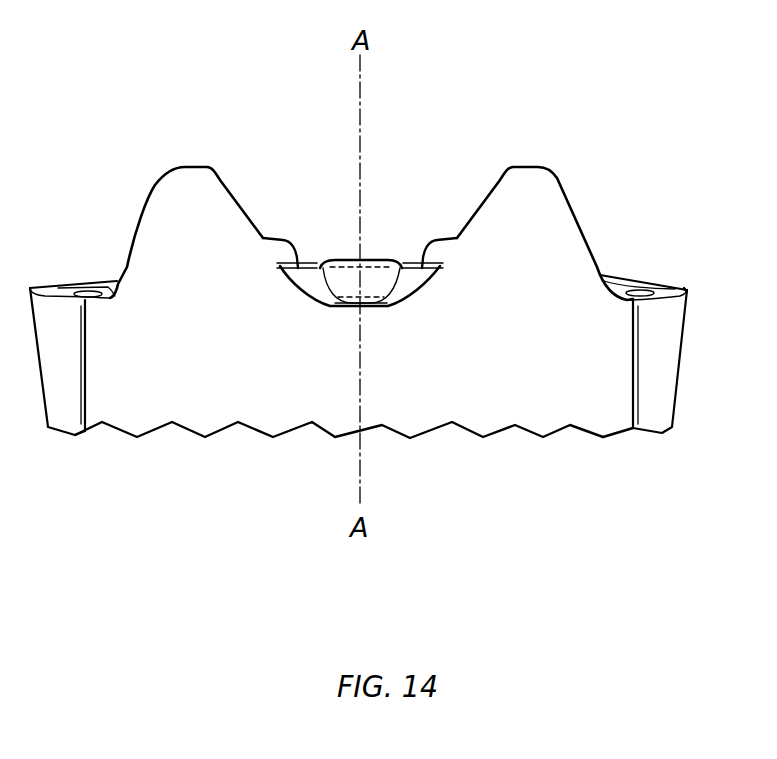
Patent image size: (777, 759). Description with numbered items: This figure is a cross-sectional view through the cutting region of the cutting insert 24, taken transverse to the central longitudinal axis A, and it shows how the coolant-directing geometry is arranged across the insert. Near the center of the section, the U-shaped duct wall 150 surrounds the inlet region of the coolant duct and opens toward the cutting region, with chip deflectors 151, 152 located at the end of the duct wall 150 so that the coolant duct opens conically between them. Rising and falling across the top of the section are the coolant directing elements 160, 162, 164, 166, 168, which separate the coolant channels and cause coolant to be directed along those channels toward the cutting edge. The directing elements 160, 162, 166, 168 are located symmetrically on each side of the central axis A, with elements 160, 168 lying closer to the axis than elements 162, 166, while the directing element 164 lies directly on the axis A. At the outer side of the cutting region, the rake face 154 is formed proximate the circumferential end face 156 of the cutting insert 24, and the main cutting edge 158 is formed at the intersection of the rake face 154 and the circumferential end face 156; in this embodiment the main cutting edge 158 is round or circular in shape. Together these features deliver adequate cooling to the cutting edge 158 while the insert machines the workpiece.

The cutting insert 24 is at (68, 131).
The U-shaped duct wall 150 is at (387, 302).
The chip deflector 151 is at (540, 166).
The chip deflector 152 is at (181, 166).
The rake face 154 is at (657, 284).
The circumferential end face 156 is at (683, 350).
The main cutting edge 158 is at (687, 287).
The coolant directing element 160 is at (413, 264).
The coolant directing element 162 is at (447, 239).
The coolant directing element 164 is at (348, 264).
The coolant directing element 166 is at (272, 236).
The coolant directing element 168 is at (306, 262).